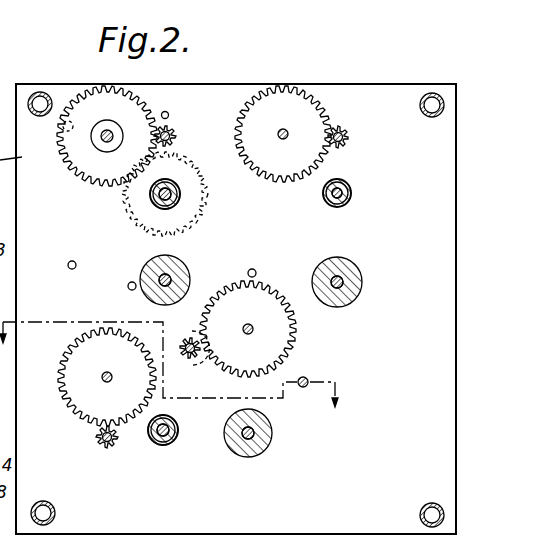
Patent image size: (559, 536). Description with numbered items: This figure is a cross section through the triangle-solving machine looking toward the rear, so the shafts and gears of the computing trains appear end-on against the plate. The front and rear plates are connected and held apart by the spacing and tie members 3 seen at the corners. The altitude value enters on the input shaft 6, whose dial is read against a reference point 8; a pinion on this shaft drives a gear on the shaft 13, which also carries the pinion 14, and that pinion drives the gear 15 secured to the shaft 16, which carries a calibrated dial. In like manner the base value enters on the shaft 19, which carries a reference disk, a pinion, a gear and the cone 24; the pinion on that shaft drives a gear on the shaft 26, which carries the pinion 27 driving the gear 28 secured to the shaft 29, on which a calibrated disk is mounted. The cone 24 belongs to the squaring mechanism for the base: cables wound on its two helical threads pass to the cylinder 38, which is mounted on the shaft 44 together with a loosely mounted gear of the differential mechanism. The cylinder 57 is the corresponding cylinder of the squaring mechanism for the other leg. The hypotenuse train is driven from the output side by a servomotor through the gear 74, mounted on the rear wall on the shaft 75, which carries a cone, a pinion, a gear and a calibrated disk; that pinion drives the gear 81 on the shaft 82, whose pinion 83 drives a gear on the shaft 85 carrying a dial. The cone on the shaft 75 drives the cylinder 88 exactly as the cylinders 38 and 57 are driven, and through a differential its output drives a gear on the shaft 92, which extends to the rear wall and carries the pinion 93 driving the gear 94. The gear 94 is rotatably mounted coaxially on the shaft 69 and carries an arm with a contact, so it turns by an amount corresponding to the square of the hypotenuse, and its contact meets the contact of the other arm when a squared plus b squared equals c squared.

The spacing and tie members 3 is at (44, 92).
The input shaft 6 is at (352, 193).
The reference point 8 is at (169, 376).
The shaft 13 is at (347, 143).
The pinion 14 is at (349, 136).
The gear 15 is at (331, 118).
The shaft 16 is at (287, 121).
The shaft 19 is at (172, 423).
The cone 24 is at (176, 442).
The shaft 26 is at (115, 440).
The pinion 27 is at (103, 446).
The gear 28 is at (82, 420).
The shaft 29 is at (105, 372).
The cylinder 38 is at (262, 438).
The shaft 44 is at (250, 444).
The cylinder 57 is at (360, 278).
The shaft 69 is at (254, 329).
The gear 74 is at (208, 214).
The shaft 75 is at (180, 190).
The gear 81 is at (92, 179).
The shaft 82 is at (172, 131).
The pinion 83 is at (178, 137).
The shaft 85 is at (100, 143).
The cylinder 88 is at (175, 271).
The shaft 92 is at (190, 340).
The pinion 93 is at (195, 368).
The gear 94 is at (266, 284).